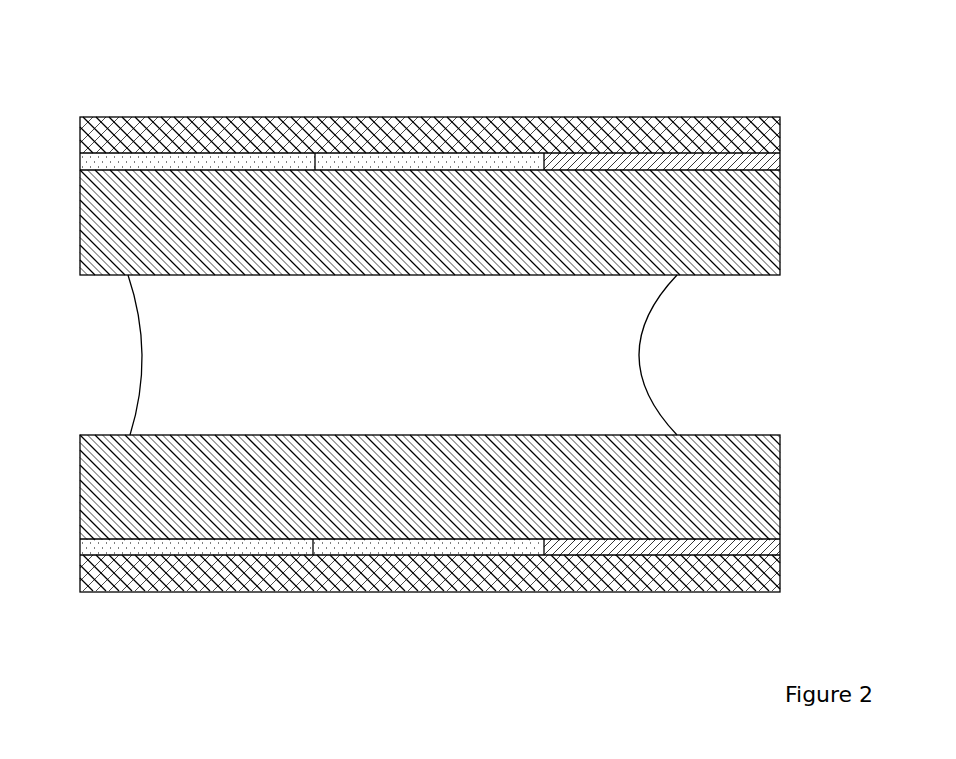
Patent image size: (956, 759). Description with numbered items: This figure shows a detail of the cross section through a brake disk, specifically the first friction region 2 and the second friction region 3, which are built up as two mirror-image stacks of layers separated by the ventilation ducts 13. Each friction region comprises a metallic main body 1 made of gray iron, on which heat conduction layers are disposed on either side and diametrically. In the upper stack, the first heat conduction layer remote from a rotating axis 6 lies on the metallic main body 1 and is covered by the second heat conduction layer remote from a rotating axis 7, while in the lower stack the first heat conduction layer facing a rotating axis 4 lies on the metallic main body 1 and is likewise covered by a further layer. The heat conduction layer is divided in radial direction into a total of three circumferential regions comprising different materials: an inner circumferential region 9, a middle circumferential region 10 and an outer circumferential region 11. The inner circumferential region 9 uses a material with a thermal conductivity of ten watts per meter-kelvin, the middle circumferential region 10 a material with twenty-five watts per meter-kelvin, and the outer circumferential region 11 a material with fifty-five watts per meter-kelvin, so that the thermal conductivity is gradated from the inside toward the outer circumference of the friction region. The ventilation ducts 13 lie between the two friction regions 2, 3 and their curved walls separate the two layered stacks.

The metallic main body 1 is at (108, 202).
The first friction region facing a rotating axis 2 is at (565, 606).
The second friction region remote from a rotating axis 3 is at (561, 104).
The first heat conduction layer facing a rotating axis 4 is at (75, 548).
The first heat conduction layer remote from a rotating axis 6 is at (74, 159).
The second heat conduction layer remote from a rotating axis 7 is at (163, 135).
The inner circumferential region 9 is at (655, 158).
The middle circumferential region 10 is at (413, 158).
The outer circumferential region 11 is at (223, 163).
The ventilation ducts 13 is at (350, 343).